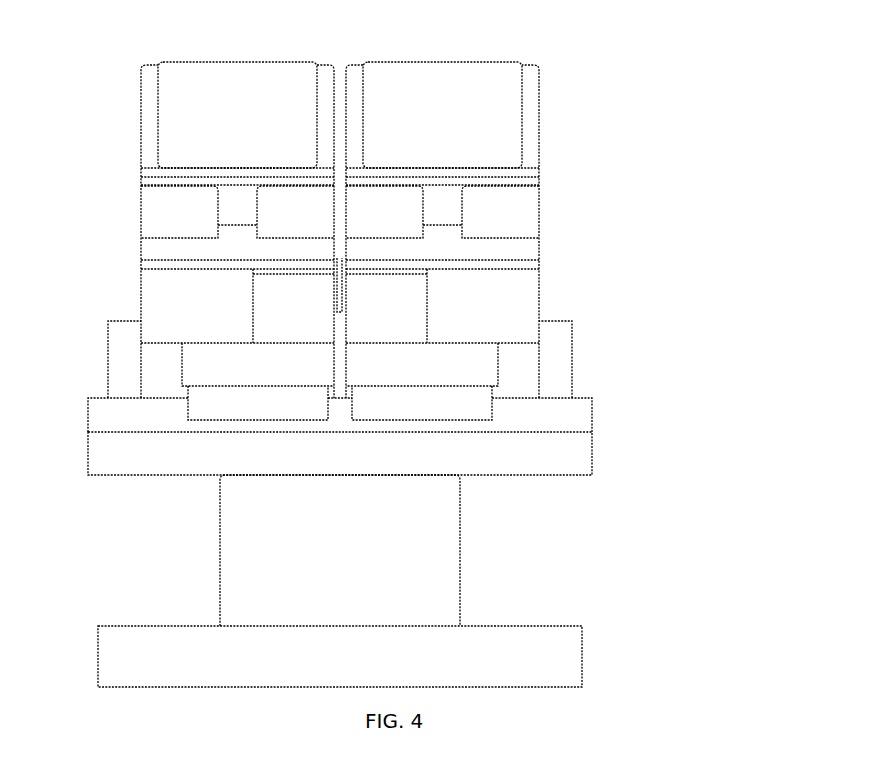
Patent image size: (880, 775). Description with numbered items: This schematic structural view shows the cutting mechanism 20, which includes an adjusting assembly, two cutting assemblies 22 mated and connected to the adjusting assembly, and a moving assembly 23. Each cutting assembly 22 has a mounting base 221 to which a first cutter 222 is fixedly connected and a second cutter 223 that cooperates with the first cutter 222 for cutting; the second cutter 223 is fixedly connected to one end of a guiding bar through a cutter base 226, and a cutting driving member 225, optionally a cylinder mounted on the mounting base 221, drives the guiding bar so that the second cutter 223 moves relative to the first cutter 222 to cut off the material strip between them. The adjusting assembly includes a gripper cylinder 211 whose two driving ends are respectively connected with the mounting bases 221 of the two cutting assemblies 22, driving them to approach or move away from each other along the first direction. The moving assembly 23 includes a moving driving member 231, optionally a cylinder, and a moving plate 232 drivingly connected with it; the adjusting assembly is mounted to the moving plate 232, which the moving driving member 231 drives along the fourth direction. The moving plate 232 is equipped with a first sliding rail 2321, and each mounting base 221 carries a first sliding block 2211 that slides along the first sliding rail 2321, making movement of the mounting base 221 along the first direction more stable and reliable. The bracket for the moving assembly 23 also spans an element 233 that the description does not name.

The cutting mechanism 20 is at (99, 79).
The cutting assembly 22 is at (141, 207).
The mounting base 221 is at (532, 145).
The first cutter 222 is at (527, 308).
The second cutter 223 is at (525, 265).
The cutting driving member 225 is at (510, 97).
The cutter base 226 is at (528, 248).
The gripper cylinder 211 is at (560, 343).
The first sliding block 2211 is at (470, 395).
The moving assembly 23 is at (705, 475).
The moving driving member 231 is at (440, 595).
The moving plate 232 is at (582, 472).
The first sliding rail 2321 is at (577, 415).
The base 233 is at (563, 659).